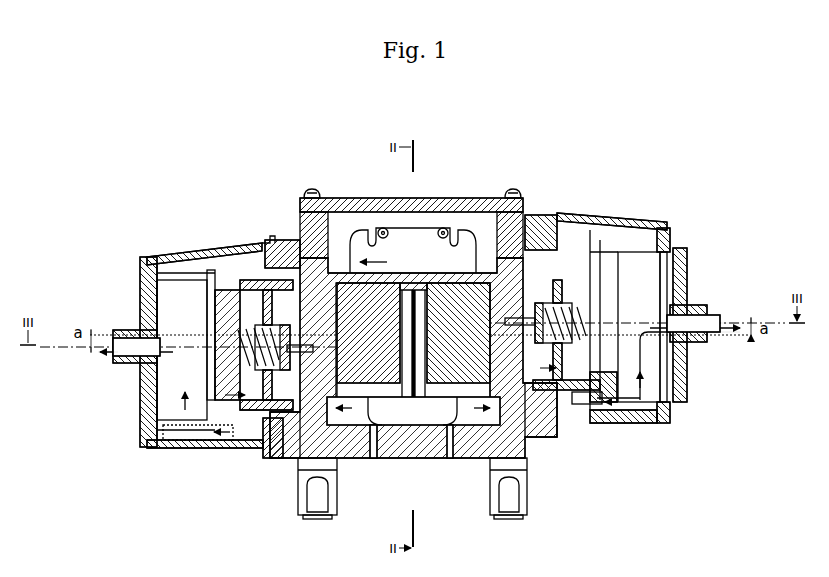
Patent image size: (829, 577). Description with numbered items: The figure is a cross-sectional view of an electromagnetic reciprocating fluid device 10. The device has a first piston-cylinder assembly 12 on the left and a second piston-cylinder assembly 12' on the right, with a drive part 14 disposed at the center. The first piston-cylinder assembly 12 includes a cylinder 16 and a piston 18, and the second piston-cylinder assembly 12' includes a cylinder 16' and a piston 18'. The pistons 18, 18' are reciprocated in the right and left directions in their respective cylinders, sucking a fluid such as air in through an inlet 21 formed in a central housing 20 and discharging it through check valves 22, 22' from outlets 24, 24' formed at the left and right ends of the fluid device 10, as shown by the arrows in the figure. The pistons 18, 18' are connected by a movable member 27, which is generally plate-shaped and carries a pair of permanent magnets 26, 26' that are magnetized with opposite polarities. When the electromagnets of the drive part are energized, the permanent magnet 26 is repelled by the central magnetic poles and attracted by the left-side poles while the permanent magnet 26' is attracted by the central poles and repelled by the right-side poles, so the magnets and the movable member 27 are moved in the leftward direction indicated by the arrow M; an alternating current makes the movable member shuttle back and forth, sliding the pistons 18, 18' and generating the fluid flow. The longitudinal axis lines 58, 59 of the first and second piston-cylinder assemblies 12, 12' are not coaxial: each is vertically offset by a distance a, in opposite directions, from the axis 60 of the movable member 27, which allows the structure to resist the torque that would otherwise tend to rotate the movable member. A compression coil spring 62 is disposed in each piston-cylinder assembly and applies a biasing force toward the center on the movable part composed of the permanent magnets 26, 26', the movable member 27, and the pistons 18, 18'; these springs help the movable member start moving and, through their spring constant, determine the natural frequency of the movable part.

The electromagnetic reciprocating fluid device 10 is at (408, 126).
The first piston-cylinder assembly 12 is at (201, 306).
The second piston-cylinder assembly 12' is at (622, 285).
The drive part 14 is at (425, 176).
The cylinder 16 is at (269, 396).
The cylinder 16' is at (545, 391).
The piston 18 is at (285, 452).
The piston 18' is at (547, 429).
The central housing 20 is at (350, 456).
The inlet 21 is at (372, 445).
The check valve 22 is at (252, 336).
The check valve 22' is at (576, 292).
The outlet 24 is at (117, 370).
The outlet 24' is at (693, 353).
The permanent magnet 26 is at (413, 442).
The permanent magnet 26' is at (413, 457).
The movable member 27 is at (492, 440).
The axis line 58 is at (80, 352).
The axis line 59 is at (735, 320).
The axis 60 is at (740, 340).
The compression coil spring 62 is at (584, 430).
The arrow indicating leftward movement direction M is at (382, 262).